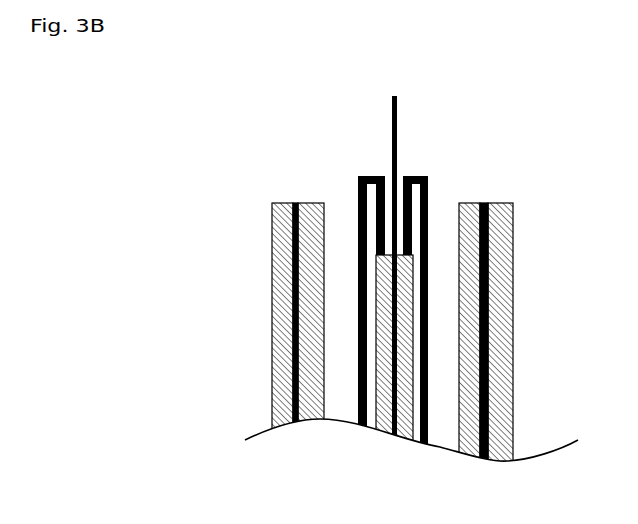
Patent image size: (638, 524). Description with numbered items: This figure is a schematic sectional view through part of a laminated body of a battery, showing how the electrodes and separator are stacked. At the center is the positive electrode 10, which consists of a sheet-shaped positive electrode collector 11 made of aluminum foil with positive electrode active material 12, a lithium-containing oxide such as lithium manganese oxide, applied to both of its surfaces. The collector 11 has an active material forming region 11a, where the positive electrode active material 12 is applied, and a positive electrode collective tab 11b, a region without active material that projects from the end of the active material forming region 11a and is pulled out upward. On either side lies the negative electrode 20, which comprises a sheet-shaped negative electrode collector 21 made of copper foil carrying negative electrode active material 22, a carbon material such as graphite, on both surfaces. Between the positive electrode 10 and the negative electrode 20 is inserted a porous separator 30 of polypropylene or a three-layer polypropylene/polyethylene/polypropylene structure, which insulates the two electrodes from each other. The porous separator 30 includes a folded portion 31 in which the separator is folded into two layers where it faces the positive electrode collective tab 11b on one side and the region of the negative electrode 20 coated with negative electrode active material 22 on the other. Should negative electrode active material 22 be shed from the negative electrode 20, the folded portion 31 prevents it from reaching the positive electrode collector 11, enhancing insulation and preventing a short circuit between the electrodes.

The positive electrode 10 is at (424, 283).
The positive electrode collector 11 is at (402, 283).
The active material forming region 11a is at (393, 435).
The positive electrode collective tab 11b is at (392, 118).
The positive electrode active material 12 is at (412, 317).
The negative electrode 20 is at (443, 338).
The negative electrode collector 21 is at (578, 272).
The negative electrode active material 22 is at (513, 285).
The porous separator 30 is at (354, 289).
The folded portion 31 is at (345, 197).